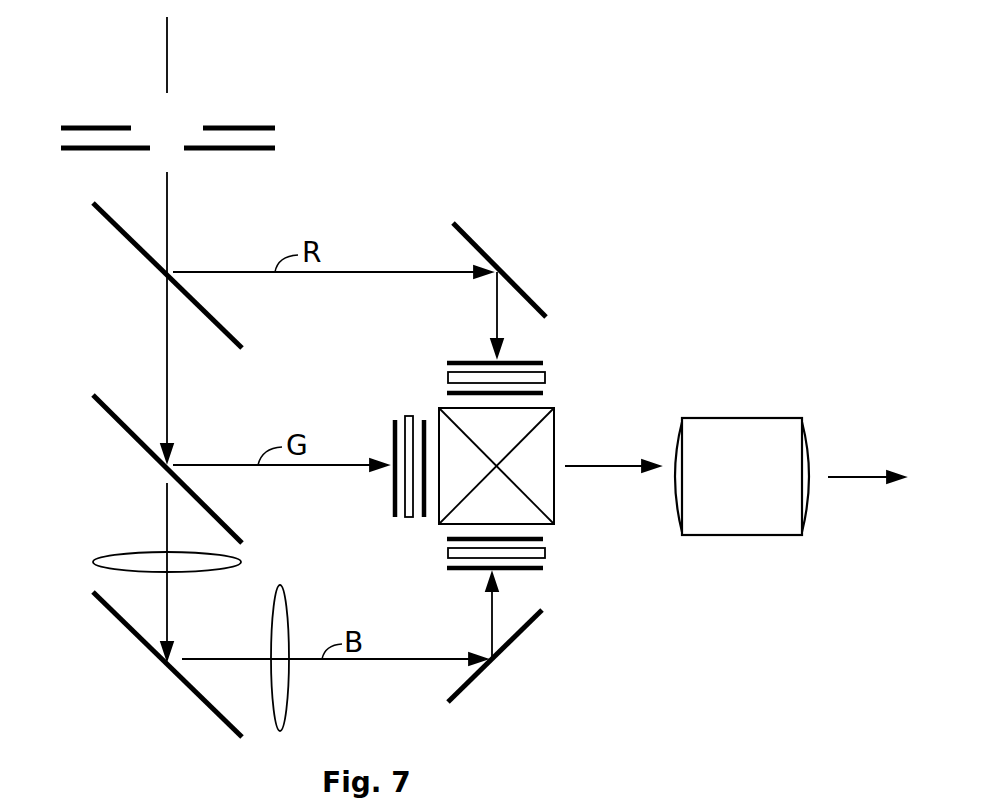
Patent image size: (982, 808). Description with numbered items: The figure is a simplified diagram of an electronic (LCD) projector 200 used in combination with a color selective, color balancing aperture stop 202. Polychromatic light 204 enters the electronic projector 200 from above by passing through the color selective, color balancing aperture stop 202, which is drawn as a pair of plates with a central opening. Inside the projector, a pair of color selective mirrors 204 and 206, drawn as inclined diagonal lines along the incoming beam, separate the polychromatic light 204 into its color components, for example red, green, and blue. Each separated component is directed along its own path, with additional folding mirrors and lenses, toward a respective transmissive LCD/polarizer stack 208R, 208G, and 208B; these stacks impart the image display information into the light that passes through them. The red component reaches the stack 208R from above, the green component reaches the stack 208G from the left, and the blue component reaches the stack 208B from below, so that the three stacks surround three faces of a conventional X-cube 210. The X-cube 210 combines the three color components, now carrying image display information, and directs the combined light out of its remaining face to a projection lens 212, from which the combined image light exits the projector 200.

The electronic projector 200 is at (548, 192).
The color selective, color balancing aperture stop 202 is at (290, 108).
The polychromatic light / color selective mirror 204 is at (168, 57).
The color selective mirror 206 is at (124, 430).
The transmissive LCD/polarizer stack 208R is at (545, 378).
The transmissive LCD/polarizer stack 208G is at (407, 518).
The transmissive LCD/polarizer stack 208B is at (545, 555).
The X-cube 210 is at (555, 490).
The projection lens 212 is at (740, 536).